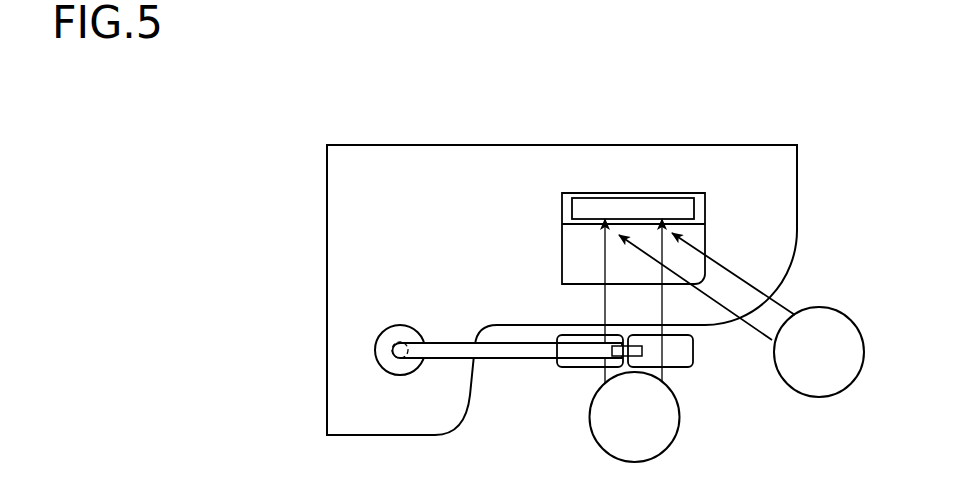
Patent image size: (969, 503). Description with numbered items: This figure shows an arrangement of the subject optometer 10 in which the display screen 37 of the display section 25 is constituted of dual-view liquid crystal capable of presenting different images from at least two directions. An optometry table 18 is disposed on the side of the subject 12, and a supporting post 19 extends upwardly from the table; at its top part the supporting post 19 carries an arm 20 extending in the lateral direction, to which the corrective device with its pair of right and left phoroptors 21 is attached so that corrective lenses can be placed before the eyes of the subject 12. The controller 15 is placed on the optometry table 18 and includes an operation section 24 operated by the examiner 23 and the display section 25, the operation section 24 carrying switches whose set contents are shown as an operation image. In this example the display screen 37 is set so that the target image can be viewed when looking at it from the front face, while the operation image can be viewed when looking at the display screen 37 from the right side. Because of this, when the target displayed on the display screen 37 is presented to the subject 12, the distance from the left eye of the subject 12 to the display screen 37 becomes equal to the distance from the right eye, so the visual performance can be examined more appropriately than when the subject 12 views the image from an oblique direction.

The subject optometer 10 is at (548, 107).
The subject 12 is at (650, 443).
The controller 15 is at (629, 188).
The optometry table 18 is at (749, 167).
The supporting post 19 is at (377, 349).
The arm 20 is at (437, 353).
The phoroptors 21 is at (568, 367).
The examiner 23 is at (833, 308).
The operation section 24 is at (574, 258).
The display section 25 is at (572, 207).
The display screen 37 is at (586, 205).